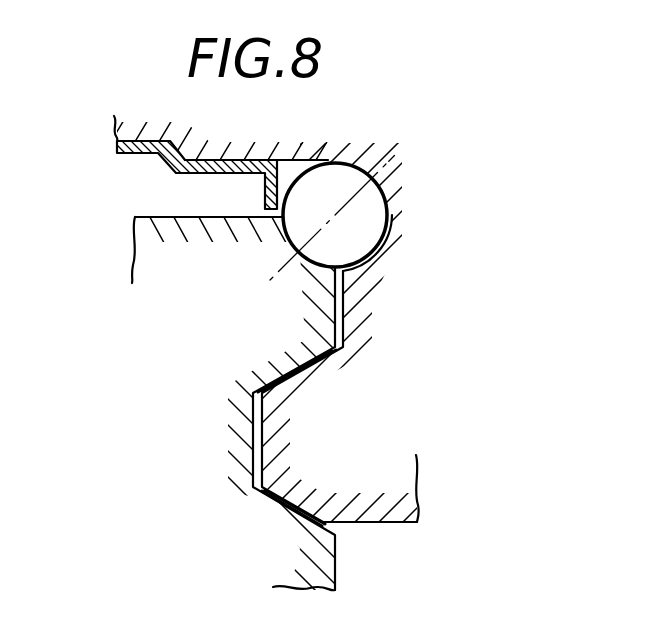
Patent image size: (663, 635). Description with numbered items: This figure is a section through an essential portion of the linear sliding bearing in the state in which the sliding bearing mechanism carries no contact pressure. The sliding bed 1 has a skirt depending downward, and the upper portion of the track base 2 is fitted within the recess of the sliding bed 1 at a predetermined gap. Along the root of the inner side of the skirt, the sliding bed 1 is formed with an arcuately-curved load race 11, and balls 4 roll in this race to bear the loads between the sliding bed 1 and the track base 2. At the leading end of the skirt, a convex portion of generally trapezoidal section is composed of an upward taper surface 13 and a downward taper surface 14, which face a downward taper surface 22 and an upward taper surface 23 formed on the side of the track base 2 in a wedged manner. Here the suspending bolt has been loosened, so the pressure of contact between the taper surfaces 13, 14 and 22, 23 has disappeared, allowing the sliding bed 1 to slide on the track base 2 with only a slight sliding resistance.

The sliding bed 1 is at (403, 528).
The track base 2 is at (165, 355).
The balls 4 is at (337, 178).
The load race 11 is at (390, 210).
The upward taper surface 13 is at (275, 378).
The downward taper surface 14 is at (278, 502).
The downward taper surface 22 is at (318, 360).
The upward taper surface 23 is at (305, 510).